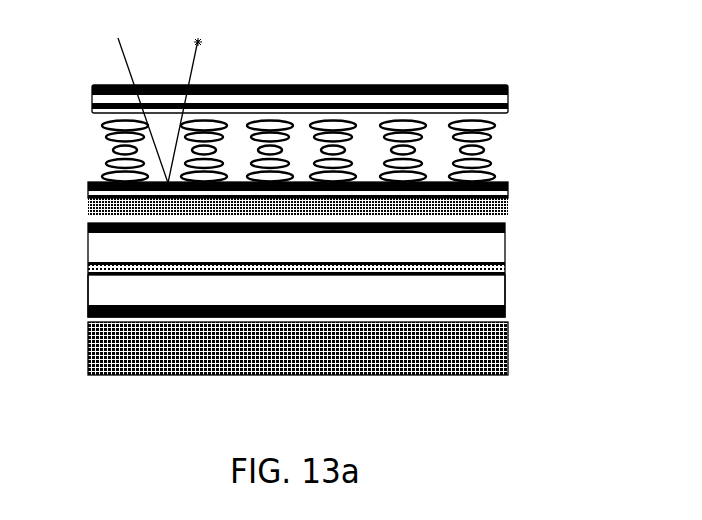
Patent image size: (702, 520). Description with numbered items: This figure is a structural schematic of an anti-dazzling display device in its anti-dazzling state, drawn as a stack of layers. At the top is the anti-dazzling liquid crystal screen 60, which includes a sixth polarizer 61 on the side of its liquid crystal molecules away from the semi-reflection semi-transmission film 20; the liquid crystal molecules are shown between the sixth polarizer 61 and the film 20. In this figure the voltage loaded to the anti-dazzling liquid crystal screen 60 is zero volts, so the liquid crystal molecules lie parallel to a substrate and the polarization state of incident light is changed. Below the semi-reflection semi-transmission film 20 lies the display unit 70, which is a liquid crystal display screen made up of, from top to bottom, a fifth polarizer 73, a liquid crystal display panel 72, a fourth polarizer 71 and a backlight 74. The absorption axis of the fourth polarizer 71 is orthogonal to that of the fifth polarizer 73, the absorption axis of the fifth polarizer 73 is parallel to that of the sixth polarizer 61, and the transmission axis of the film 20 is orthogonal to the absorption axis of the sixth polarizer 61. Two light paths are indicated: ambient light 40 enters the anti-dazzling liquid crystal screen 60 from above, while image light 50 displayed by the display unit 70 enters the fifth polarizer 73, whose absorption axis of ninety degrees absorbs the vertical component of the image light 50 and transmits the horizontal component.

The sixth polarizer 61 is at (495, 84).
The anti-dazzling liquid crystal screen 60 is at (498, 147).
The semi-reflection semi-transmission film 20 is at (506, 200).
The fifth polarizer 73 is at (505, 223).
The liquid crystal display panel 72 is at (505, 268).
The fourth polarizer 71 is at (505, 307).
The backlight 74 is at (508, 350).
The display unit 70 is at (309, 298).
The image light 50 is at (392, 88).
The ambient light 40 is at (151, 99).